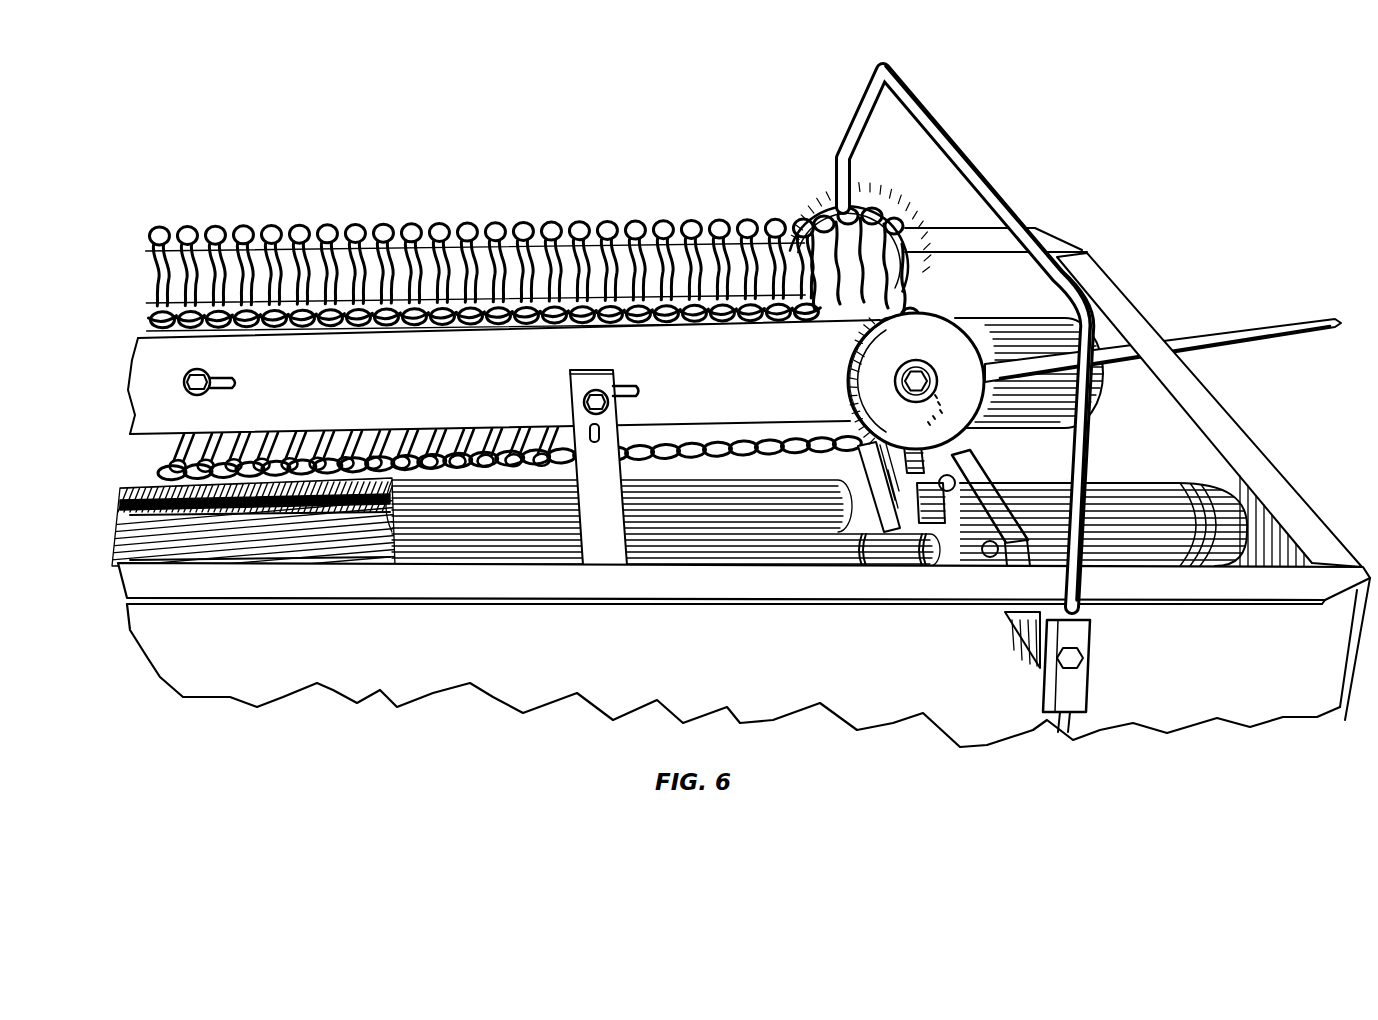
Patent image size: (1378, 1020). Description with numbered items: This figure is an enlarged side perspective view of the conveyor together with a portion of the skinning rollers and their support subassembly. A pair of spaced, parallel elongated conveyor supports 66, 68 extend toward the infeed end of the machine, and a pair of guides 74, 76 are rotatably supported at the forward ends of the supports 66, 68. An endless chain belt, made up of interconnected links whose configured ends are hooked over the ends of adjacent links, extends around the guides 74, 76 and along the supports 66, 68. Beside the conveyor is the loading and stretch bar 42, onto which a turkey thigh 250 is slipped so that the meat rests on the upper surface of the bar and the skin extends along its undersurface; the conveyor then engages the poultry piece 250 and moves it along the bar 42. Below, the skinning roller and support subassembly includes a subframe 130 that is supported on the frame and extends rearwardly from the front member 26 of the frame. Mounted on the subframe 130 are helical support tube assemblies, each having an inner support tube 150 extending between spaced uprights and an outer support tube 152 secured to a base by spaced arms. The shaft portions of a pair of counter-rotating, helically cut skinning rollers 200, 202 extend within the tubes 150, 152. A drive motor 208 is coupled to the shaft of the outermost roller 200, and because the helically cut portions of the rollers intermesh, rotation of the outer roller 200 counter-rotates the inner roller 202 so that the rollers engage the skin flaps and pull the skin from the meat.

The front member 26 is at (1297, 512).
The loading and stretch bar 42 is at (1270, 325).
The conveyor support 66 is at (498, 392).
The conveyor support 68 is at (627, 228).
The guide 74 is at (858, 207).
The guide 76 is at (928, 343).
The subframe 130 is at (1017, 563).
The inner support tube 150 is at (780, 552).
The outer support tube 152 is at (687, 502).
The skinning roller 200 is at (130, 543).
The skinning roller 202 is at (137, 492).
The drive motor 208 is at (1088, 323).
The turkey thigh 250 is at (840, 150).